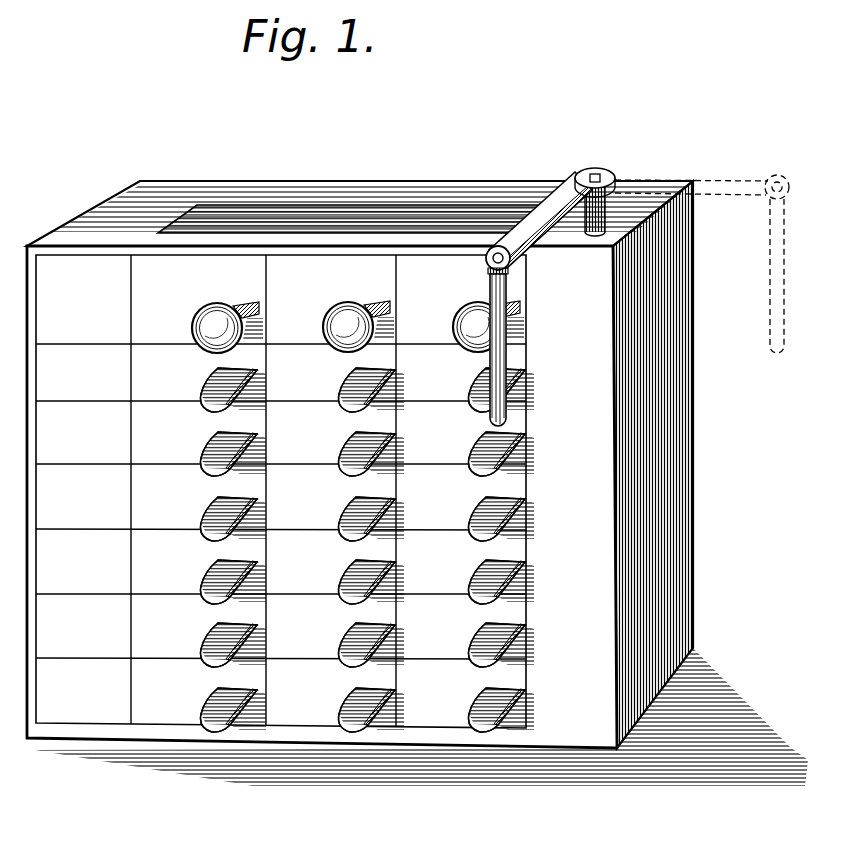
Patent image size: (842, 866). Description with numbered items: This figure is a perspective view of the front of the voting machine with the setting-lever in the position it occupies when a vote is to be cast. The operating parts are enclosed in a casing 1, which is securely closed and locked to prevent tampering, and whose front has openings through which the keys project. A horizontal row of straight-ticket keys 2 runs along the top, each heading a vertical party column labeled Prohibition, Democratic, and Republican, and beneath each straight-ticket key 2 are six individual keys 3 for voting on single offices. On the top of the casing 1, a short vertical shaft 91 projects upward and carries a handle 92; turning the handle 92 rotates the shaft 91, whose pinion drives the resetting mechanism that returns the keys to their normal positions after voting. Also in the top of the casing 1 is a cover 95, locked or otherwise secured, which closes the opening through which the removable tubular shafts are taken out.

The casing 1 is at (417, 483).
The straight-ticket key 2 is at (520, 311).
The individual key 3 is at (383, 543).
The short vertical shaft 91 is at (608, 219).
The handle 92 is at (548, 216).
The cover 95 is at (322, 211).